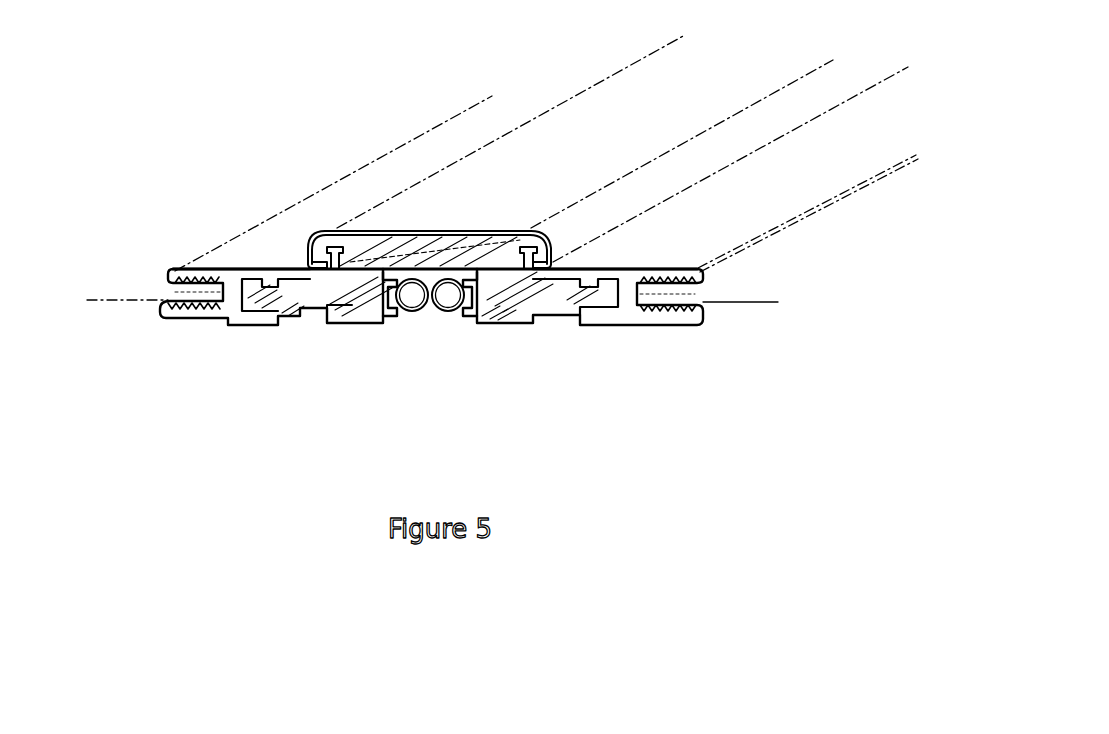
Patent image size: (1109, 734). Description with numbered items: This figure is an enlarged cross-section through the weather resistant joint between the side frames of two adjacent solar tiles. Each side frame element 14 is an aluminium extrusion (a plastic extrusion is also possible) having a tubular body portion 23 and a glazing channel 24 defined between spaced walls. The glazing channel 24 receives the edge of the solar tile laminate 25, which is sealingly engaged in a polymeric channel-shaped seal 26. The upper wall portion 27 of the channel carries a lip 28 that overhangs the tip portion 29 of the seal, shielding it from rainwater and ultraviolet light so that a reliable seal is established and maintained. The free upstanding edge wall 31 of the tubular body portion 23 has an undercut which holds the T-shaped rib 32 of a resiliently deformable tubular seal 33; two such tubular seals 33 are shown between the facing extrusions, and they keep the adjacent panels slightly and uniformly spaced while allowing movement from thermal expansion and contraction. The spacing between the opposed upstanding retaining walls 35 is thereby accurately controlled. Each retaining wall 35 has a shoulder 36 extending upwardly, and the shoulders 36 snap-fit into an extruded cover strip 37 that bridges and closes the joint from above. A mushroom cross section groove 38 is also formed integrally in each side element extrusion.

The side frame element 14 is at (500, 337).
The tubular body portion 23 is at (560, 303).
The glazing channel 24 is at (683, 297).
The solar tile laminate 25 is at (110, 293).
The polymeric channel-shaped seal 26 is at (163, 310).
The upper wall portion 27 is at (618, 260).
The lip 28 is at (171, 268).
The tip portion 29 is at (175, 280).
The free upstanding edge wall 31 is at (310, 310).
The T-shaped rib 32 is at (360, 312).
The resiliently deformable tubular seal 33 is at (453, 315).
The upstanding retaining wall 35 is at (522, 247).
The shoulder 36 is at (315, 245).
The extruded cover strip 37 is at (427, 225).
The mushroom cross section groove 38 is at (300, 317).